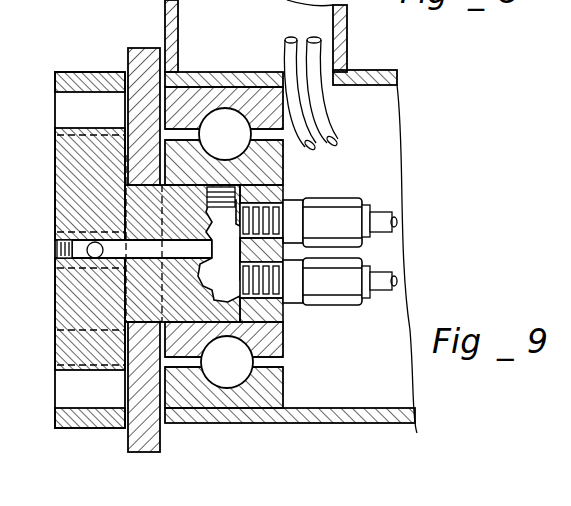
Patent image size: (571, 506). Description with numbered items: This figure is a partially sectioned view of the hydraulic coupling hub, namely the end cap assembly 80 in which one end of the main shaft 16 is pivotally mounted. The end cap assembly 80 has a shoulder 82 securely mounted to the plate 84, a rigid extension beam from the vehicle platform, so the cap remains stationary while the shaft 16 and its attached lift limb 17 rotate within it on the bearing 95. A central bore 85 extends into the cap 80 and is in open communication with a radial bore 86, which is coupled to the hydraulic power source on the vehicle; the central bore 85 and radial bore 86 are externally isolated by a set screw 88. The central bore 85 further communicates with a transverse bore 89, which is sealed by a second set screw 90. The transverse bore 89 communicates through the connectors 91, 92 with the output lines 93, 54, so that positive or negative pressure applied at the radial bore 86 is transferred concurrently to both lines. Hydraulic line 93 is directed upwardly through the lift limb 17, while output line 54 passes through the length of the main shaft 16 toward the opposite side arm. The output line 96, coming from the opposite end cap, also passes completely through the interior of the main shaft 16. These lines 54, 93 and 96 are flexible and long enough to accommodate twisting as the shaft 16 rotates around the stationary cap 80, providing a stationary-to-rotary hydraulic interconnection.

The main shaft 16 is at (399, 80).
The lift limb 17 is at (229, 36).
The output line 54 is at (398, 280).
The end cap assembly 80 is at (86, 72).
The shoulder 82 is at (133, 173).
The plate 84 is at (142, 48).
The central bore 85 is at (112, 258).
The radial bore 86 is at (90, 256).
The set screw 88 is at (57, 246).
The transverse bore 89 is at (264, 300).
The set screw 90 is at (232, 192).
The connector 91 is at (340, 198).
The connector 92 is at (350, 302).
The hydraulic line 93 is at (393, 222).
The bearing 95 is at (280, 386).
The output line 96 is at (336, 116).